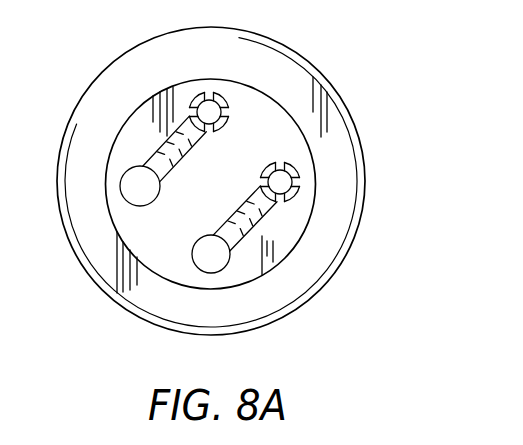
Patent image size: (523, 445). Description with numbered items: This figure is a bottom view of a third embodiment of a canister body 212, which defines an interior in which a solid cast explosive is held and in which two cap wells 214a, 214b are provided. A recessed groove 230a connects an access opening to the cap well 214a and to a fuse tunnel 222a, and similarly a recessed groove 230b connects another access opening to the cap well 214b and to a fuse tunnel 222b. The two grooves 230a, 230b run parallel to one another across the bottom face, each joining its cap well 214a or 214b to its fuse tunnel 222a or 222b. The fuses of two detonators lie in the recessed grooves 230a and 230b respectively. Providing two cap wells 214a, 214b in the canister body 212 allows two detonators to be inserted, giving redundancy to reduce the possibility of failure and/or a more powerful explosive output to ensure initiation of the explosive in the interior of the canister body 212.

The canister body 212 is at (138, 48).
The cap well 214a is at (213, 110).
The cap well 214b is at (282, 181).
The fuse tunnel 222a is at (140, 188).
The fuse tunnel 222b is at (213, 258).
The recessed groove 230a is at (165, 152).
The recessed groove 230b is at (237, 230).